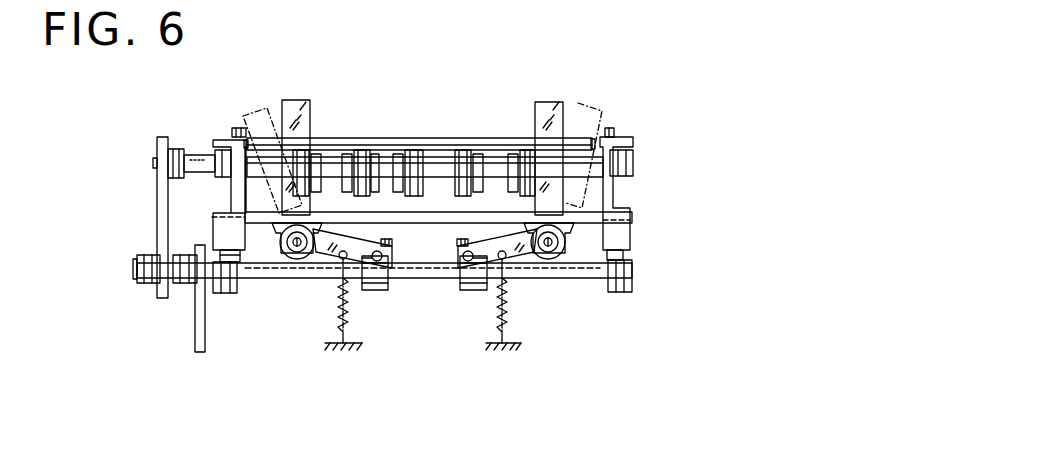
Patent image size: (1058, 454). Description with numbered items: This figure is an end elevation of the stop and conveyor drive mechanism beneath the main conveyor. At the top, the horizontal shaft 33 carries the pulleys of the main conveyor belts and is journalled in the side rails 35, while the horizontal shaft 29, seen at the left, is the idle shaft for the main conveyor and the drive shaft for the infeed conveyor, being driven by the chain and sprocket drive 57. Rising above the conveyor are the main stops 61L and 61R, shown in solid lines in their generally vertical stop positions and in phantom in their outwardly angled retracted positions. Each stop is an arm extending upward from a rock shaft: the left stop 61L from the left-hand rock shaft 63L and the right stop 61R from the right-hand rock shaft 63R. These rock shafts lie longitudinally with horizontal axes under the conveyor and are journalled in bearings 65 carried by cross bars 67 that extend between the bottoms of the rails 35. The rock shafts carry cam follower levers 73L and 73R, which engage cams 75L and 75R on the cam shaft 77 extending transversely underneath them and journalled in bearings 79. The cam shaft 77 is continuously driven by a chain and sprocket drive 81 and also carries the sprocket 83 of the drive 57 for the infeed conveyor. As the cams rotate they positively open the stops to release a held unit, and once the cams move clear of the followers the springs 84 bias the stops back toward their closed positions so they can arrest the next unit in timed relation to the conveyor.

The horizontal shaft 29 is at (157, 163).
The horizontal shaft 33 is at (438, 165).
The side rails 35 is at (222, 140).
The chain and sprocket drive 57 is at (156, 208).
The right-hand main stop 61R is at (293, 104).
The left-hand main stop 61L is at (545, 108).
The right-hand rock shaft 63R is at (297, 246).
The left-hand rock shaft 63L is at (548, 246).
The bearings 65 is at (280, 250).
The cross bars 67 is at (632, 218).
The right cam follower lever 73R is at (357, 243).
The left cam follower lever 73L is at (485, 243).
The right cam 75R is at (380, 290).
The left cam 75L is at (468, 290).
The cam shaft 77 is at (435, 278).
The bearings 79 is at (228, 294).
The chain and sprocket drive 81 is at (194, 339).
The sprocket 83 is at (153, 285).
The springs 84 is at (340, 322).